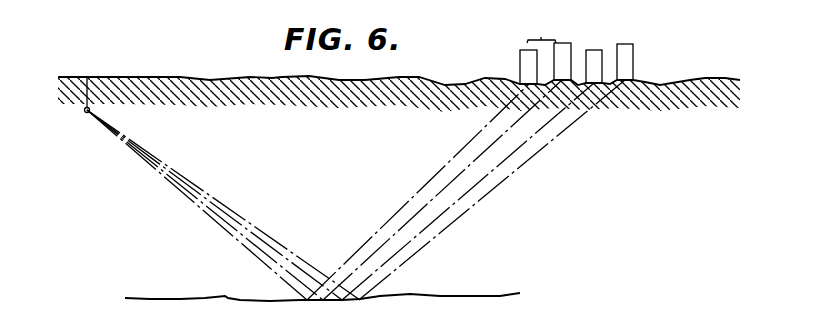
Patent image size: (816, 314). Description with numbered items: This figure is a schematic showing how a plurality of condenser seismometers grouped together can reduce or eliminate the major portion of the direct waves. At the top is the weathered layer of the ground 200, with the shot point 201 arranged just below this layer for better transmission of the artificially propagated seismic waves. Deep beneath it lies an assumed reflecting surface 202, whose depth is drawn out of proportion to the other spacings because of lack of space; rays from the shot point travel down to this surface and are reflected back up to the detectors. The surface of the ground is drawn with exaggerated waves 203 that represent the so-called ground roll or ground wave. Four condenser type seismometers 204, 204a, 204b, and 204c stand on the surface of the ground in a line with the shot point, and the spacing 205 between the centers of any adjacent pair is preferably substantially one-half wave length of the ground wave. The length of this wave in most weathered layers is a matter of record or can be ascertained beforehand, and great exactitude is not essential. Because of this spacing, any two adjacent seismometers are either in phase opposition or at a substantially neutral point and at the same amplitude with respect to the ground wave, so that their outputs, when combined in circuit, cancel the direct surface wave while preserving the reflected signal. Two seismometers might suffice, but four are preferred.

The weathered layer of the ground 200 is at (223, 96).
The shot point 201 is at (85, 112).
The reflecting surface 202 is at (201, 283).
The exaggerated waves 203 is at (701, 68).
The condenser type seismometer 204 is at (519, 61).
The condenser type seismometer 204a is at (573, 44).
The condenser type seismometer 204b is at (595, 52).
The condenser type seismometer 204c is at (649, 93).
The spacing 205 is at (541, 37).